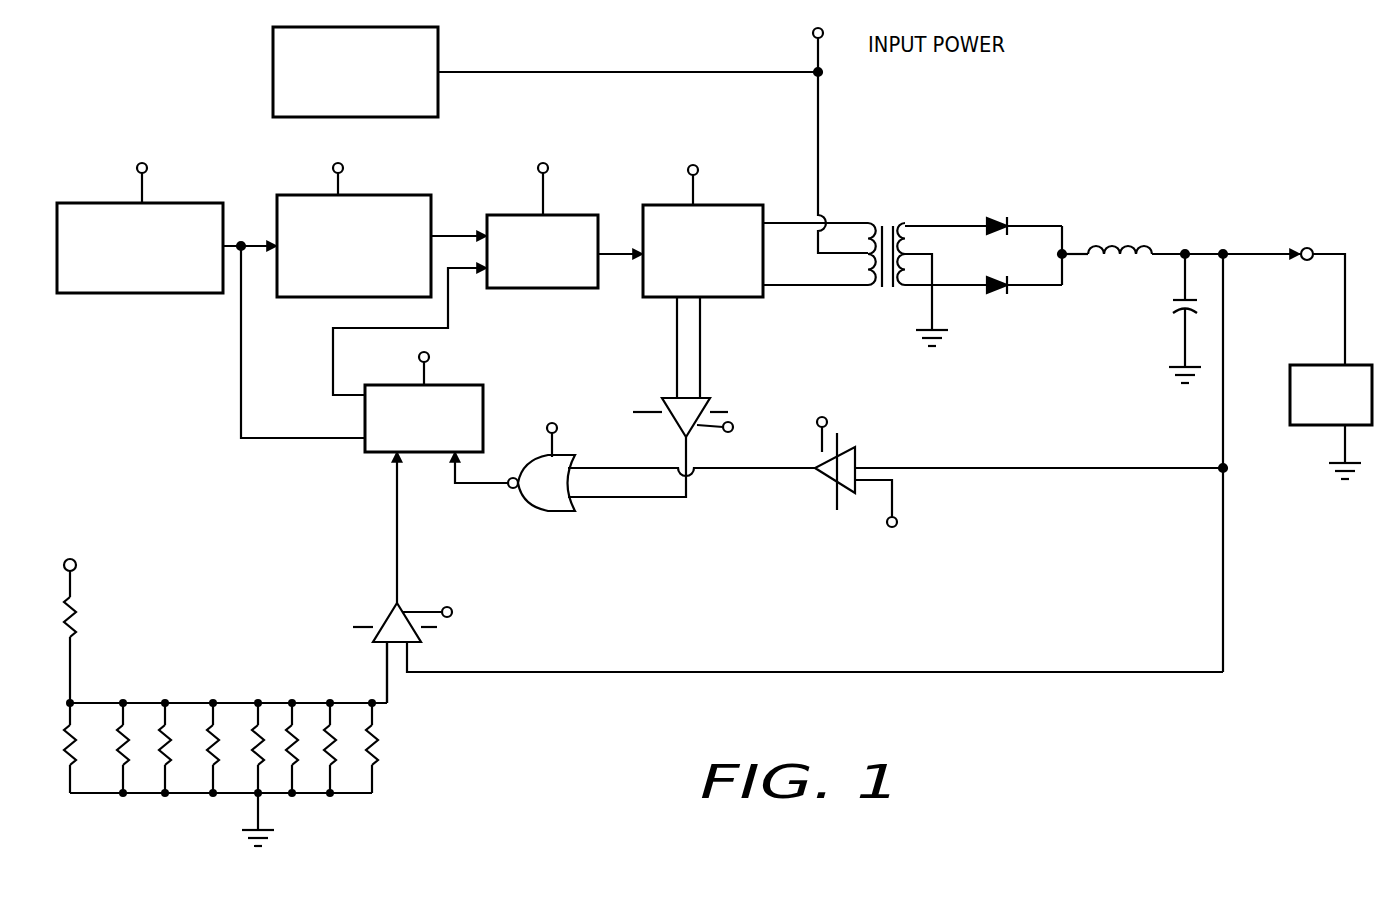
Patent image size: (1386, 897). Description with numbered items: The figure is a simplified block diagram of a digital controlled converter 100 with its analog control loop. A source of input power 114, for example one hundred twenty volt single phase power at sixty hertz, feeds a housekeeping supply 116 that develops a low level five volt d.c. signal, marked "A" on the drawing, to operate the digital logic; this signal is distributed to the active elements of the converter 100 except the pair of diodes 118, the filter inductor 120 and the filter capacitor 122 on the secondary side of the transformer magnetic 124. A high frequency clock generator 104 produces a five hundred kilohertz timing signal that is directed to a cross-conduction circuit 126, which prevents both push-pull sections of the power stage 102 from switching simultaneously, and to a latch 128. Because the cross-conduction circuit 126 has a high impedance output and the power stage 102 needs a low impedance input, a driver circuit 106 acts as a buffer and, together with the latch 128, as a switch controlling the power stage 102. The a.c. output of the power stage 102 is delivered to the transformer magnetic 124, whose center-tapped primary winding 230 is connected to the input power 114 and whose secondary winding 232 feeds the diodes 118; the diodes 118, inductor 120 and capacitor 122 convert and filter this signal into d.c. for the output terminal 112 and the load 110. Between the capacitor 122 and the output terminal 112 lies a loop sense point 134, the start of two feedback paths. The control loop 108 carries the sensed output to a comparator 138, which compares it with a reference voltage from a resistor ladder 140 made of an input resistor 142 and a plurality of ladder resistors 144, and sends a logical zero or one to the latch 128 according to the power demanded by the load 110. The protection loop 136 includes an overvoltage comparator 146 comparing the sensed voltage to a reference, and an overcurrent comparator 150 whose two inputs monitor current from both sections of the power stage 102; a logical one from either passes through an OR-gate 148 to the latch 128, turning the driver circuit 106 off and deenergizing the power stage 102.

The digital controlled converter 100 is at (1190, 160).
The power stage 102 is at (735, 205).
The clock generator 104 is at (127, 293).
The driver circuit 106 is at (510, 215).
The control loop 108 is at (1075, 676).
The load 110 is at (1310, 428).
The output terminal 112 is at (1312, 246).
The source of input power 114 is at (813, 33).
The housekeeping supply 116 is at (273, 72).
The pair of diodes 118 is at (995, 218).
The filter inductor 120 is at (1115, 240).
The filter capacitor 122 is at (1172, 304).
The transformer magnetic 124 is at (875, 252).
The cross-conduction circuit 126 is at (295, 195).
The latch 128 is at (466, 385).
The loop sense point 134 is at (1225, 250).
The protection loop 136 is at (1073, 475).
The comparator 138 is at (389, 605).
The resistor ladder 140 is at (283, 745).
The input resistor 142 is at (97, 617).
The ladder resistors 144 is at (218, 746).
The overvoltage comparator 146 is at (823, 478).
The OR-gate 148 is at (556, 511).
The overcurrent comparator 150 is at (712, 398).
The primary winding 230 is at (866, 289).
The secondary winding 232 is at (905, 292).